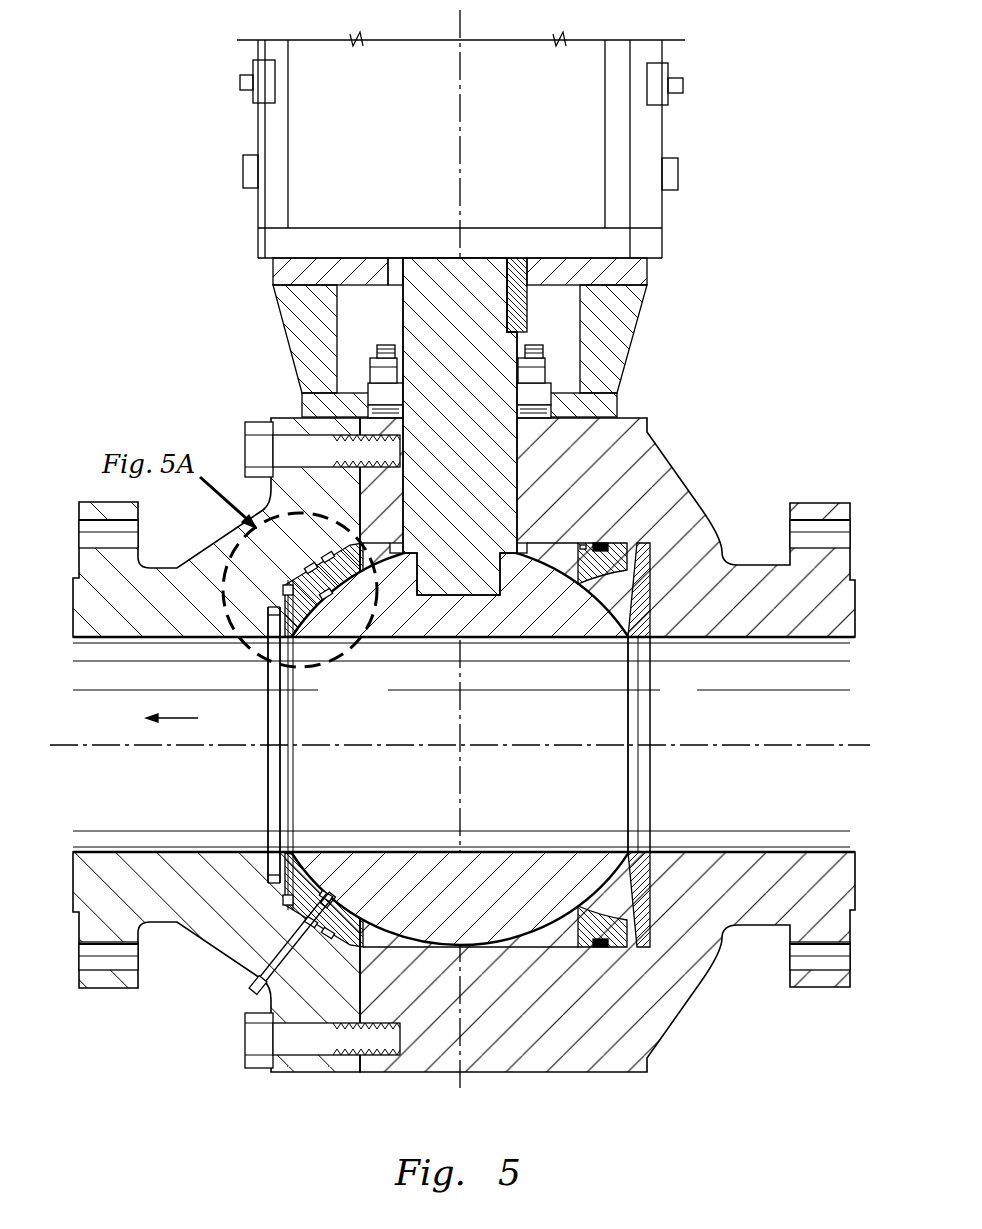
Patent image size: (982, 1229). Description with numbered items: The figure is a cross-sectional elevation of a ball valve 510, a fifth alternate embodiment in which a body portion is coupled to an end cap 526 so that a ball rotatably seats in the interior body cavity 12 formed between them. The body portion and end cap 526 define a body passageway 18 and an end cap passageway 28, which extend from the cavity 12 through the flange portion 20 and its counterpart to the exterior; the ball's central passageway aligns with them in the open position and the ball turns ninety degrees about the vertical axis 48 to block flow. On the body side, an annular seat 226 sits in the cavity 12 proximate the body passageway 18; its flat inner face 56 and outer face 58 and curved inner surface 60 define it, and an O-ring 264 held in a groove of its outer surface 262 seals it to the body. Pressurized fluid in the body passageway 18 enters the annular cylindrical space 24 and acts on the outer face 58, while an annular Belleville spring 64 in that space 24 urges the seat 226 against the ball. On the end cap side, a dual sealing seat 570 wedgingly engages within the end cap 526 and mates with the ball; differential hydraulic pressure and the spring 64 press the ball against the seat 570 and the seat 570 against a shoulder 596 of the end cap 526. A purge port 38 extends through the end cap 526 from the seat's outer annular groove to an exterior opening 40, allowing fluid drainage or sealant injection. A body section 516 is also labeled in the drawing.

The interior body cavity 12 is at (553, 945).
The body passageway 18 is at (762, 813).
The flange portion 20 is at (850, 505).
The annular cylindrical space 24 is at (636, 946).
The end cap passageway 28 is at (184, 803).
The purge port 38 is at (278, 955).
The opening 40 is at (262, 990).
The vertical axis 48 is at (462, 30).
The inner face 56 is at (576, 551).
The outer face 58 is at (641, 598).
The curved inner surface 60 is at (593, 880).
The annular spring 64 is at (641, 628).
The annular seat 226 is at (603, 545).
The outer surface 262 is at (566, 557).
The O-ring 264 is at (598, 947).
The ball valve 510 is at (477, 1132).
The outlet body section 516 is at (846, 597).
The end cap 526 is at (82, 593).
The dual sealing seat 570 is at (326, 596).
The shoulder 596 is at (323, 877).